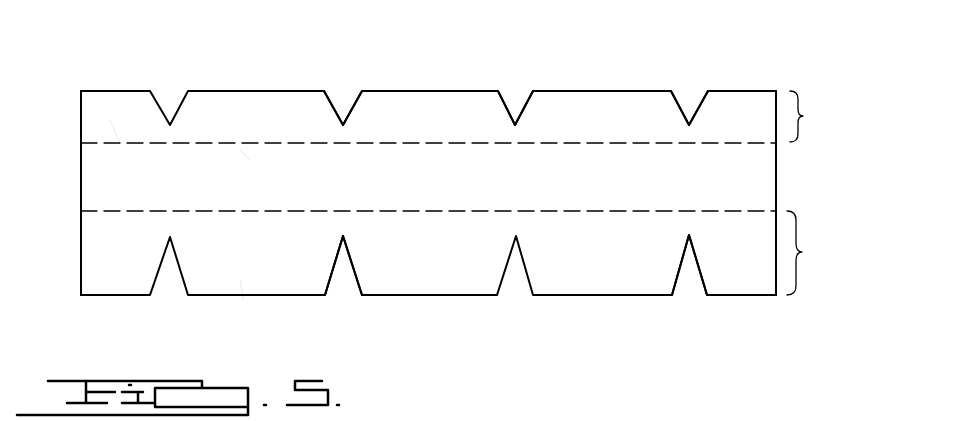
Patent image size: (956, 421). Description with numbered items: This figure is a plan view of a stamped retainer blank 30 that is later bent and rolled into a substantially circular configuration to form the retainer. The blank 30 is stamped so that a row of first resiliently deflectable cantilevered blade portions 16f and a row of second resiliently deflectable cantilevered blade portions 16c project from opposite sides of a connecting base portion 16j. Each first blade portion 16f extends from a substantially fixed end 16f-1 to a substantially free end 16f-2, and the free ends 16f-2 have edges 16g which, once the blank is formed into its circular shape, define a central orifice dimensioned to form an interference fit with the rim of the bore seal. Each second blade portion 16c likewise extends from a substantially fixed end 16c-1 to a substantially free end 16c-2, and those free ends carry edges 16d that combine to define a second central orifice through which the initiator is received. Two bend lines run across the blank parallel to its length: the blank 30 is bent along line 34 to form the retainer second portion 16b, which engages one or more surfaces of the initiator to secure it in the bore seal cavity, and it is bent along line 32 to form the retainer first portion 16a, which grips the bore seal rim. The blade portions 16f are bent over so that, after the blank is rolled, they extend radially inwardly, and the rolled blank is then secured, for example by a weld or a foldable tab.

The retainer first portion 16a is at (822, 116).
The retainer second portion 16b is at (819, 253).
The second resiliently deflectable cantilevered blade portions 16c is at (612, 257).
The substantially fixed end 16c-1 is at (365, 237).
The substantially free end 16c-2 is at (427, 278).
The edges 16d is at (482, 296).
The first resiliently deflectable cantilevered blade portions 16f is at (386, 118).
The substantially fixed end 16f-1 is at (660, 143).
The substantially free end 16f-2 is at (645, 100).
The edges 16g is at (598, 90).
The connecting base portion 16j is at (103, 187).
The retainer blank 30 is at (251, 172).
The bend line 32 is at (120, 143).
The bend line 34 is at (217, 211).